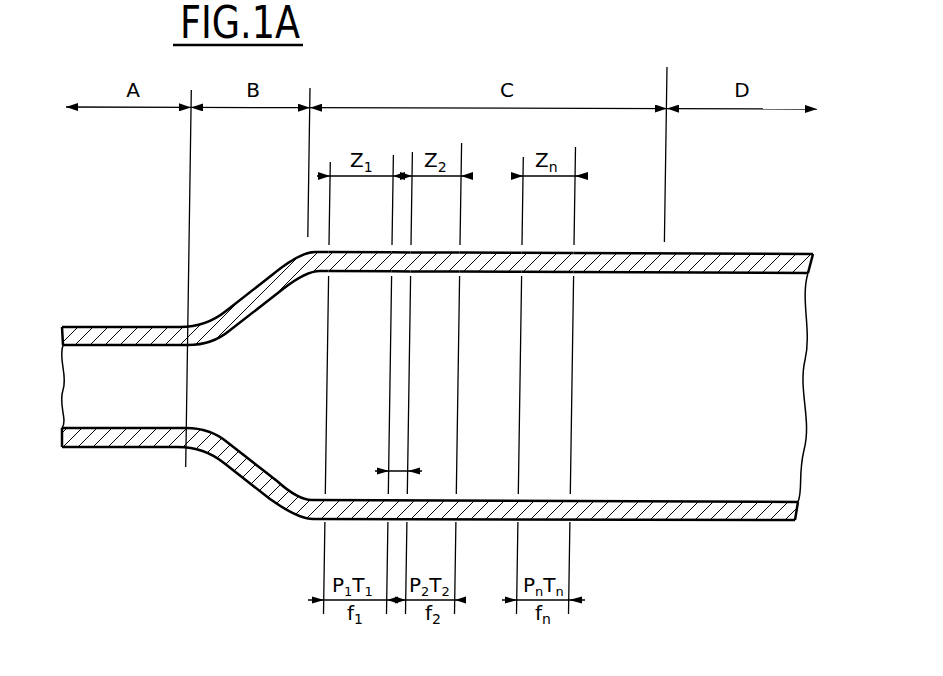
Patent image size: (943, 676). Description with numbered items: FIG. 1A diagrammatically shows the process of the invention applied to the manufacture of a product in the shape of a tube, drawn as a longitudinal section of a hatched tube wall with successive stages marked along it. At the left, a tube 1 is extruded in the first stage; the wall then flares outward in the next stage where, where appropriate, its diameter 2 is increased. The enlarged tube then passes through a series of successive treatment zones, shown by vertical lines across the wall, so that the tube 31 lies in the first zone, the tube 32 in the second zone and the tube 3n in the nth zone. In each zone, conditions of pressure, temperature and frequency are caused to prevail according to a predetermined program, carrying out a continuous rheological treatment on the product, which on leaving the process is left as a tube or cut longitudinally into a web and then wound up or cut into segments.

The tube 1 is at (124, 338).
The diameter 2 is at (244, 297).
The tube 31 is at (360, 258).
The tube 32 is at (436, 258).
The tube 3n is at (548, 256).